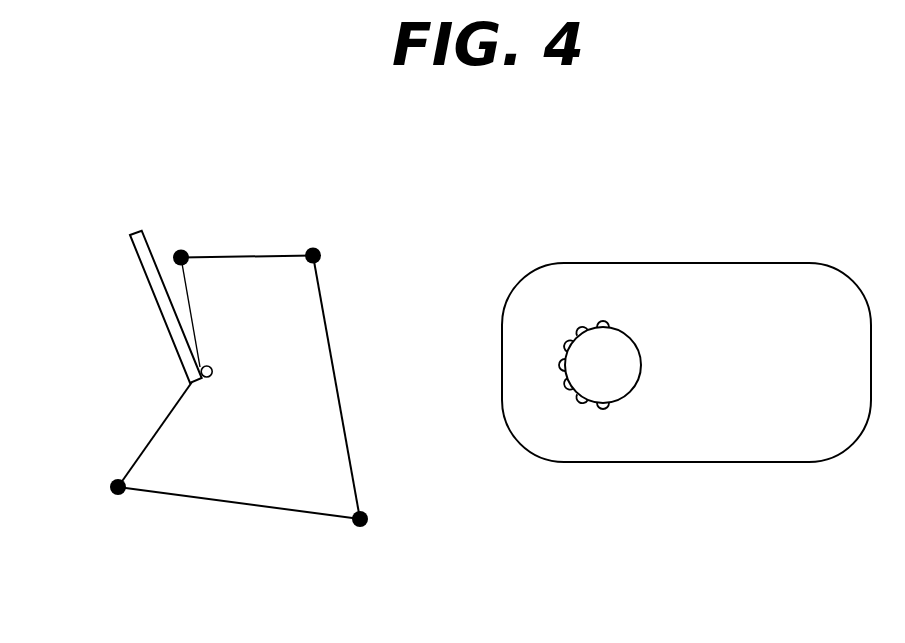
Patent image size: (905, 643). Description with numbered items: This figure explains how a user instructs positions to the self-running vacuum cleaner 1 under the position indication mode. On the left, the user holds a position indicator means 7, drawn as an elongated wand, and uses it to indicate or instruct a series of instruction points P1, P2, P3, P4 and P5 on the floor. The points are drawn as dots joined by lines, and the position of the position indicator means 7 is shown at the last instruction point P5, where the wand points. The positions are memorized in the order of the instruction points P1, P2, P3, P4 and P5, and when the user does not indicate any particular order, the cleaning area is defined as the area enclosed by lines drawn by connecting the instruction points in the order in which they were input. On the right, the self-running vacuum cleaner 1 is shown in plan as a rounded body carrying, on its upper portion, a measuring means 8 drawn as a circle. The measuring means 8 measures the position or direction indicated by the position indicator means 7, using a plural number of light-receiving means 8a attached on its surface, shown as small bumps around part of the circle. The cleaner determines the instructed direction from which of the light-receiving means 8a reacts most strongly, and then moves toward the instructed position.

The self-running vacuum cleaner 1 is at (528, 282).
The position indicator means 7 is at (132, 245).
The measuring means 8 is at (620, 348).
The light-receiving means 8a is at (577, 327).
The instruction point P1 is at (240, 292).
The instruction point P2 is at (328, 367).
The instruction point P3 is at (245, 526).
The instruction point P4 is at (142, 458).
The instruction point P5 is at (224, 375).